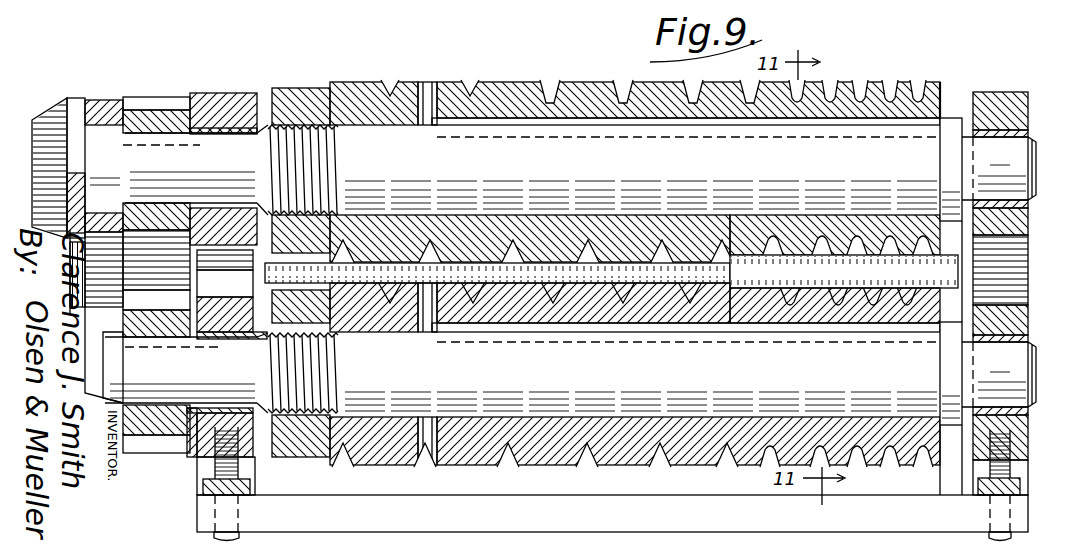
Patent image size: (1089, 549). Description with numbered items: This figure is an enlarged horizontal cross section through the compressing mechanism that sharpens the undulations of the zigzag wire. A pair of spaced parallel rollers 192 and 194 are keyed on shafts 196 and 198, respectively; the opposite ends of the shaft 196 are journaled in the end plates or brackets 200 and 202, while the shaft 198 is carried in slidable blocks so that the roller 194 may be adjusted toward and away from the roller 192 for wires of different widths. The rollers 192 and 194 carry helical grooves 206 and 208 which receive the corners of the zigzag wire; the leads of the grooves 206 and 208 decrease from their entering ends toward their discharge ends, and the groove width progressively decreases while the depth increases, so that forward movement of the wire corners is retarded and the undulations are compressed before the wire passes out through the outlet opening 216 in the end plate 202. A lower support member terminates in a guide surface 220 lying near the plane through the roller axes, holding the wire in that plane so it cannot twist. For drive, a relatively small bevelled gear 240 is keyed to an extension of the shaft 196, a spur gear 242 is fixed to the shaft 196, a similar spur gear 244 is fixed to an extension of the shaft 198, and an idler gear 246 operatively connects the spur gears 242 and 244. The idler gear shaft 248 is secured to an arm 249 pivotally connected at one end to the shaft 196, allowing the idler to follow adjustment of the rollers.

The roller 192 is at (922, 88).
The roller 194 is at (500, 0).
The shaft 196 is at (950, 127).
The shaft 198 is at (950, 407).
The end plate 200 is at (50, 119).
The end plate 202 is at (1043, 0).
The helical groove 206 is at (397, 83).
The helical groove 208 is at (256, 0).
The outlet opening 216 is at (1007, 305).
The guide surface 220 is at (943, 277).
The bevelled gear 240 is at (55, 100).
The spur gear 242 is at (157, 98).
The spur gear 244 is at (157, 448).
The idler gear 246 is at (142, 288).
The idler gear shaft 248 is at (77, 312).
The arm 249 is at (103, 108).